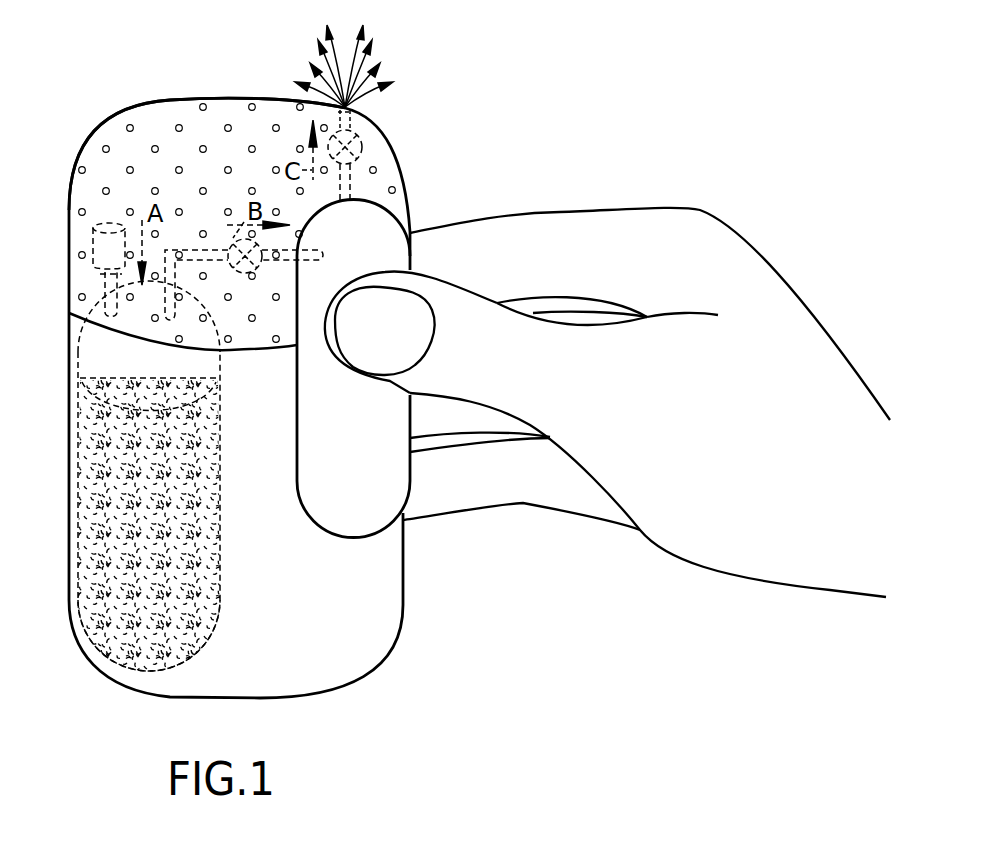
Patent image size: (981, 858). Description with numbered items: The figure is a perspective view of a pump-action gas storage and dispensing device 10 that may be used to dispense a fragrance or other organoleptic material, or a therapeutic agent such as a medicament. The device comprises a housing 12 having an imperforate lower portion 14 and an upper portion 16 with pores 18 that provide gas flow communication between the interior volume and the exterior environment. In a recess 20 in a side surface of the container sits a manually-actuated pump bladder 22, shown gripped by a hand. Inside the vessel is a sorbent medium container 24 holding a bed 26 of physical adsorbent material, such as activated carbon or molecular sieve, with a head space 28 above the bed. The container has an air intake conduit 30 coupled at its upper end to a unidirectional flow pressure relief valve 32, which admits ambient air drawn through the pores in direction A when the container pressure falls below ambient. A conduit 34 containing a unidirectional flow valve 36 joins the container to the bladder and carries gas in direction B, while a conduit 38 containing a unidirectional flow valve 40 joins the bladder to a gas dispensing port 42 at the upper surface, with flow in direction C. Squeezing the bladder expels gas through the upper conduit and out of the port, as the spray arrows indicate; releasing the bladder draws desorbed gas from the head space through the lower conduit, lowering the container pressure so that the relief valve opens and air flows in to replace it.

The storage and dispensing device 10 is at (100, 92).
The housing 12 is at (403, 600).
The lower portion 14 is at (295, 688).
The upper portion 16 is at (270, 103).
The pores 18 is at (82, 170).
The recess 20 is at (353, 538).
The pump bladder 22 is at (397, 232).
The sorbent medium container 24 is at (200, 647).
The bed of sorbent material 26 is at (83, 505).
The head space 28 is at (97, 365).
The air intake conduit 30 is at (105, 306).
The unidirectional flow pressure relief valve 32 is at (103, 248).
The conduit 34 is at (200, 247).
The unidirectional flow valve 36 is at (230, 248).
The conduit 38 is at (348, 192).
The unidirectional flow valve 40 is at (363, 143).
The gas dispensing port 42 is at (350, 115).